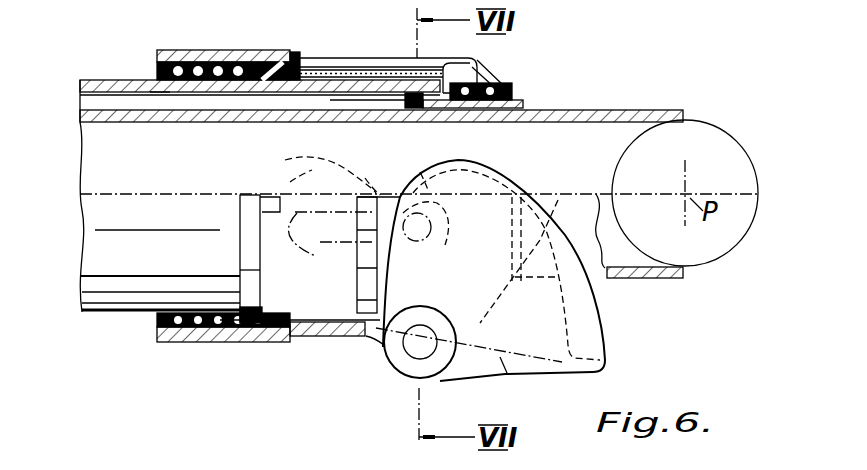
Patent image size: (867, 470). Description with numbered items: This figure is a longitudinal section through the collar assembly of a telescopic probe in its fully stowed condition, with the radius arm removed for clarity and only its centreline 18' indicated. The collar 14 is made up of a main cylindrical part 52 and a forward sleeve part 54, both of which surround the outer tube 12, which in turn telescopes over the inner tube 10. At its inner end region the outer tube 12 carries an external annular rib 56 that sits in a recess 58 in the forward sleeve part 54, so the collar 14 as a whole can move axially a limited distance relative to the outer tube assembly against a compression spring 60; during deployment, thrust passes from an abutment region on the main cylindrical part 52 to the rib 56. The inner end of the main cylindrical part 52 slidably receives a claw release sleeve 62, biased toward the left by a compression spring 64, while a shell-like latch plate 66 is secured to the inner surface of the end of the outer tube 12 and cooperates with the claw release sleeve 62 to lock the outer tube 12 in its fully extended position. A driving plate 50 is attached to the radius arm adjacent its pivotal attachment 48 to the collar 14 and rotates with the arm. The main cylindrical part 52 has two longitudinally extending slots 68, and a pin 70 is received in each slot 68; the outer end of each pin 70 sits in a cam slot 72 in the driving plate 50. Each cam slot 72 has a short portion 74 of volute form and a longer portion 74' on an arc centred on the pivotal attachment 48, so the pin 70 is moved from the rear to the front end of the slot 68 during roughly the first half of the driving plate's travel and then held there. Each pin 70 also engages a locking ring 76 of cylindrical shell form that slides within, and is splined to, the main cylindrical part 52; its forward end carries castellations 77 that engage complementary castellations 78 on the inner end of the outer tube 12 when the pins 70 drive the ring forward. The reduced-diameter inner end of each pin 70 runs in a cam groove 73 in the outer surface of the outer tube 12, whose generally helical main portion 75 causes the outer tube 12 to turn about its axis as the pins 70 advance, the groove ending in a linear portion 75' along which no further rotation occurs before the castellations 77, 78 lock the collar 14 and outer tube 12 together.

The inner tube 10 is at (623, 110).
The outer tube 12 is at (90, 80).
The collar 14 is at (176, 349).
The centreline of the radius arm 18' is at (478, 371).
The pivotal attachment 48 is at (413, 350).
The driving plate 50 is at (605, 366).
The main cylindrical part 52 is at (308, 58).
The forward sleeve part 54 is at (160, 52).
The external annular rib 56 is at (255, 57).
The recess 58 is at (217, 60).
The compression spring 60 is at (160, 88).
The claw release sleeve 62 is at (527, 107).
The compression spring 64 is at (500, 80).
The latch plate 66 is at (402, 98).
The longitudinally extending slot 68 is at (314, 250).
The pin 70 is at (437, 247).
The cam slot 72 is at (600, 314).
The cam groove 73 is at (285, 160).
The short portion of cam slot 74 is at (400, 156).
The longer portion of cam slot 74' is at (536, 236).
The main portion of cam groove 75 is at (349, 158).
The link position 75' is at (263, 181).
The locking ring 76 is at (390, 60).
The castellations 77 is at (365, 283).
The castellations 78 is at (272, 283).